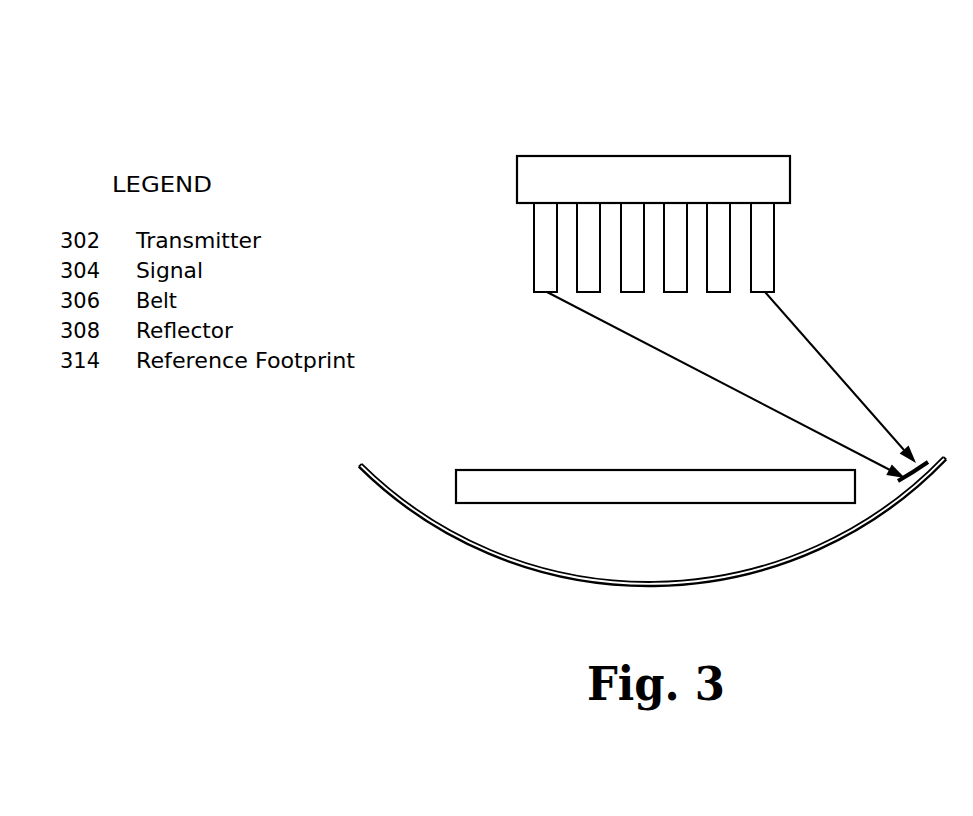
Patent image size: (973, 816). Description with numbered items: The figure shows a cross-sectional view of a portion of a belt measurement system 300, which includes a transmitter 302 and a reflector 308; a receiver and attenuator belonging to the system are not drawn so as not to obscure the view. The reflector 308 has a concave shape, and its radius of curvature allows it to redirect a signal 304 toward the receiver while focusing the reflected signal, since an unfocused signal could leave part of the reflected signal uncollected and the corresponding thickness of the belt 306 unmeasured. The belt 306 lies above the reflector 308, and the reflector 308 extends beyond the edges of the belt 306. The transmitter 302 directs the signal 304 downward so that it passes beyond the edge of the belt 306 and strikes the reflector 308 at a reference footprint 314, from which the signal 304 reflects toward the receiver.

The system 300 is at (450, 86).
The transmitter 302 is at (790, 172).
The signal 304 is at (868, 342).
The belt 306 is at (494, 470).
The reflector 308 is at (433, 523).
The reference footprint 314 is at (923, 468).